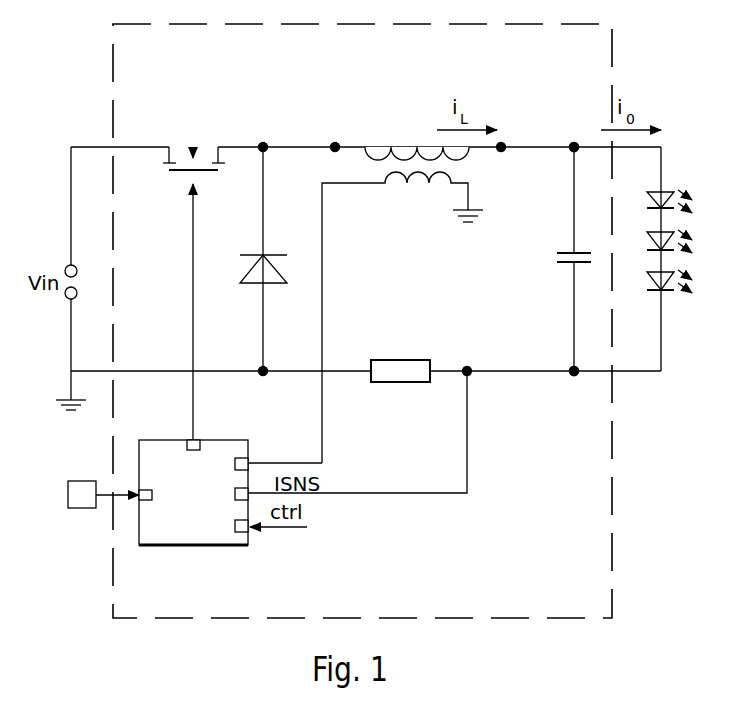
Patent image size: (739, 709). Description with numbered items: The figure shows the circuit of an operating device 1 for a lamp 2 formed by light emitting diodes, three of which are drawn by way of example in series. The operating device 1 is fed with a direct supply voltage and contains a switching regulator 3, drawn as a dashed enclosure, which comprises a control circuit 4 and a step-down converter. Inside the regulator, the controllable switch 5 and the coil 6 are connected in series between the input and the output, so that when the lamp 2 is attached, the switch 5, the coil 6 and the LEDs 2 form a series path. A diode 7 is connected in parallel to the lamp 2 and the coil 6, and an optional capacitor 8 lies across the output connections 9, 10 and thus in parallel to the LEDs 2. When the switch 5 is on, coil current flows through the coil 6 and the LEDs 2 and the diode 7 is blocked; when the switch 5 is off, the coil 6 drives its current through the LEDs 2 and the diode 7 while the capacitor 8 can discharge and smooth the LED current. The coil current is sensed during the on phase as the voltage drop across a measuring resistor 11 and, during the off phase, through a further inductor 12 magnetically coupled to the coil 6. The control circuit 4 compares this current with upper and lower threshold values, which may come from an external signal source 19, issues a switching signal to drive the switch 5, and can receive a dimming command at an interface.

The operating device 1 is at (655, 424).
The lamp 2 is at (678, 176).
The switching regulator 3 is at (590, 619).
The control circuit 4 is at (193, 548).
The controllable switch 5 is at (186, 130).
The coil 6 is at (403, 135).
The diode 7 is at (248, 284).
The capacitor 8 is at (556, 258).
The output connection 9 is at (574, 145).
The output connection 10 is at (573, 378).
The measuring resistor 11 is at (402, 358).
The further inductor 12 is at (419, 186).
The external signal source 19 is at (82, 510).